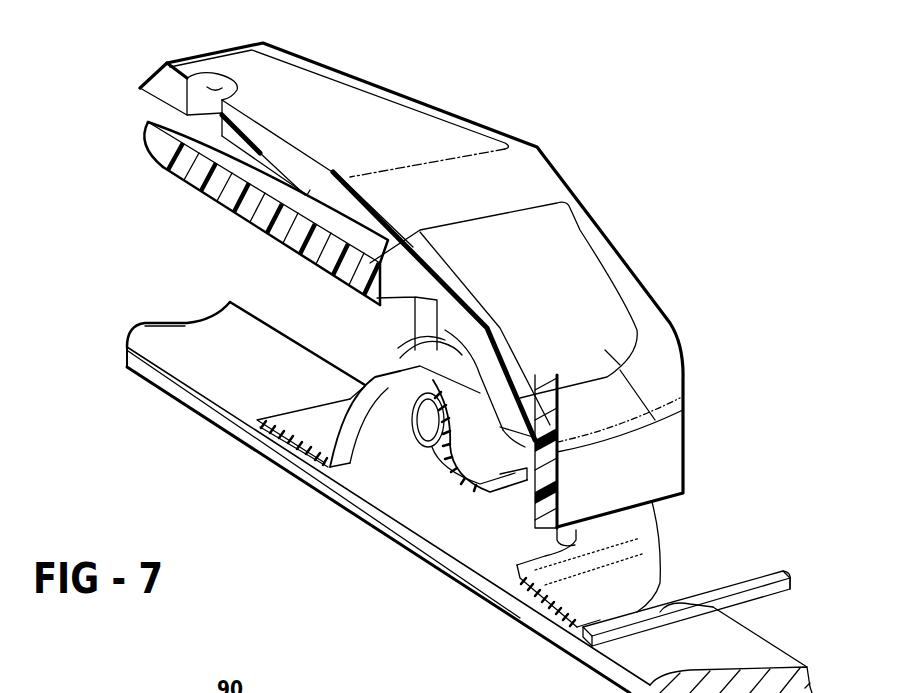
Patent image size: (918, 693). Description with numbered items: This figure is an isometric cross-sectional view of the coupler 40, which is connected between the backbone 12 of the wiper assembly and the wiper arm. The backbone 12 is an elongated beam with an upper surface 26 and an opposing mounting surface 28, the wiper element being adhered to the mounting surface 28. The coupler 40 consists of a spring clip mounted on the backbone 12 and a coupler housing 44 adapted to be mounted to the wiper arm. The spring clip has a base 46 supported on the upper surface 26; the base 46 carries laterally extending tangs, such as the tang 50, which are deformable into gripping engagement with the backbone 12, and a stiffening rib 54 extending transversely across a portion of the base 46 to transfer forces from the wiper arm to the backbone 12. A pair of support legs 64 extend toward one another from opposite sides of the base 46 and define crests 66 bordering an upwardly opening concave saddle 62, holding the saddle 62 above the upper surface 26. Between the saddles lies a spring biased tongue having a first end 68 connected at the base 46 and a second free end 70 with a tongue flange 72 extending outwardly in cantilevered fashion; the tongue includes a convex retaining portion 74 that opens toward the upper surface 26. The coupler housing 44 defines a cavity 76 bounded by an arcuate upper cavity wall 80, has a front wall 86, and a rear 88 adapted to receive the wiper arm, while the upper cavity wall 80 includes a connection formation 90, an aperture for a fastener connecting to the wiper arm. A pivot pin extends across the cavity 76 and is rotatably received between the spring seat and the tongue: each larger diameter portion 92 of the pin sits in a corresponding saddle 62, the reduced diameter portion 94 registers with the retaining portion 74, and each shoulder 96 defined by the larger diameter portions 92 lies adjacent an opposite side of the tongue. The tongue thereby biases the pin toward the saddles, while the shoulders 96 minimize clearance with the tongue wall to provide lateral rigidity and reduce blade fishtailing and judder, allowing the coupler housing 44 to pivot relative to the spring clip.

The backbone 12 is at (150, 318).
The upper surface 26 is at (210, 338).
The mounting surface 28 is at (160, 392).
The coupler 40 is at (208, 492).
The coupler housing 44 is at (417, 155).
The base 46 is at (320, 425).
The tang 50 is at (767, 578).
The stiffening rib 54 is at (637, 612).
The concave saddle 62 is at (549, 413).
The support leg 64 is at (630, 523).
The crest 66 is at (463, 357).
The first end 68 is at (375, 428).
The second free end 70 is at (497, 460).
The tongue flange 72 is at (563, 487).
The convex retaining portion 74 is at (443, 402).
The cavity 76 is at (402, 275).
The upper cavity wall 80 is at (422, 290).
The front wall 86 is at (557, 490).
The rear 88 is at (134, 141).
The connection formation 90 is at (230, 87).
The larger diameter portion 92 is at (505, 410).
The reduced diameter portion 94 is at (428, 432).
The shoulder 96 is at (470, 368).